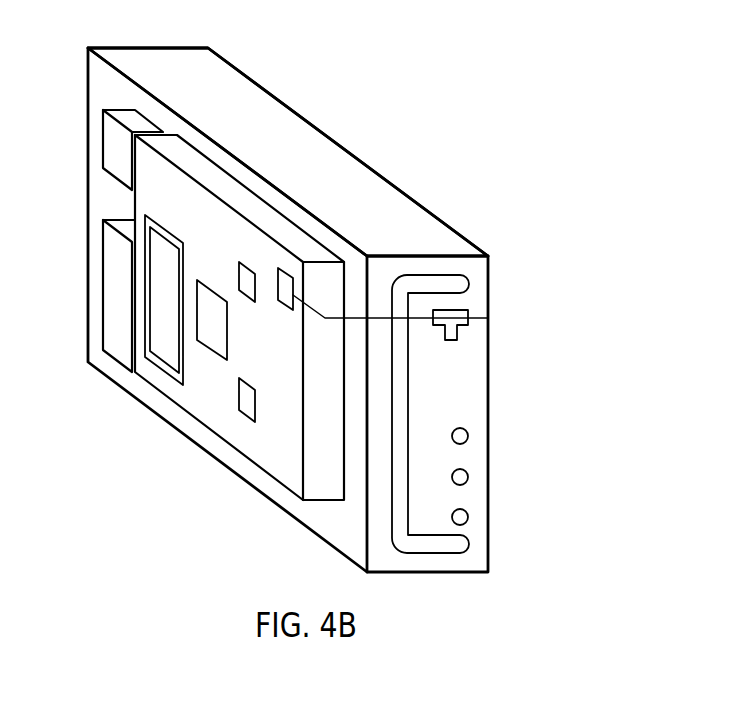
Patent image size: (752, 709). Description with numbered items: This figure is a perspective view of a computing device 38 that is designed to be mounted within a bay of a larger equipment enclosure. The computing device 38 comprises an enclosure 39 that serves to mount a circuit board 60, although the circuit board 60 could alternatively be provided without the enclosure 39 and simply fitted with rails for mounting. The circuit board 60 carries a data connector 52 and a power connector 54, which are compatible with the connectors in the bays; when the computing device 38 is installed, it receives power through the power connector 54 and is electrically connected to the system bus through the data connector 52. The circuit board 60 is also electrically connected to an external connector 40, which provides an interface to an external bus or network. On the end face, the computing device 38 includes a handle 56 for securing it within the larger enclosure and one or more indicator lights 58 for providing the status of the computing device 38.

The computing device 38 is at (455, 90).
The enclosure 39 is at (257, 110).
The external connector 40 is at (488, 318).
The data connector 52 is at (110, 293).
The power connector 54 is at (112, 143).
The handle 56 is at (415, 547).
The indicator lights 58 is at (466, 436).
The circuit board 60 is at (210, 412).